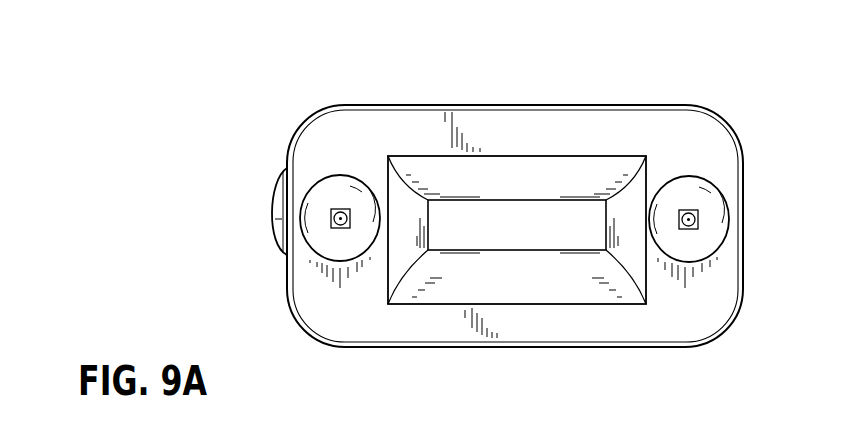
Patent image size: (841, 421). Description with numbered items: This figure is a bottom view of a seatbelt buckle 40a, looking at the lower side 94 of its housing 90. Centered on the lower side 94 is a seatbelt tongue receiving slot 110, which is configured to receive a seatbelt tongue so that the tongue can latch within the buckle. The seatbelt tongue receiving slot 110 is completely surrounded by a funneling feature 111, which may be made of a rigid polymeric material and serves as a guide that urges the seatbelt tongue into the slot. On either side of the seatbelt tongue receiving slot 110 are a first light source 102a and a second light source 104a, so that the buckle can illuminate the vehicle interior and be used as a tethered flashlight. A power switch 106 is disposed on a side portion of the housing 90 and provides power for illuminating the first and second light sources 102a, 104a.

The seatbelt buckle 40a is at (267, 123).
The housing 90 is at (669, 105).
The lower side 94 is at (496, 123).
The funneling feature 111 is at (555, 188).
The seatbelt tongue receiving slot 110 is at (567, 238).
The power switch 106 is at (276, 207).
The first light source 102a is at (330, 242).
The second light source 104a is at (702, 240).